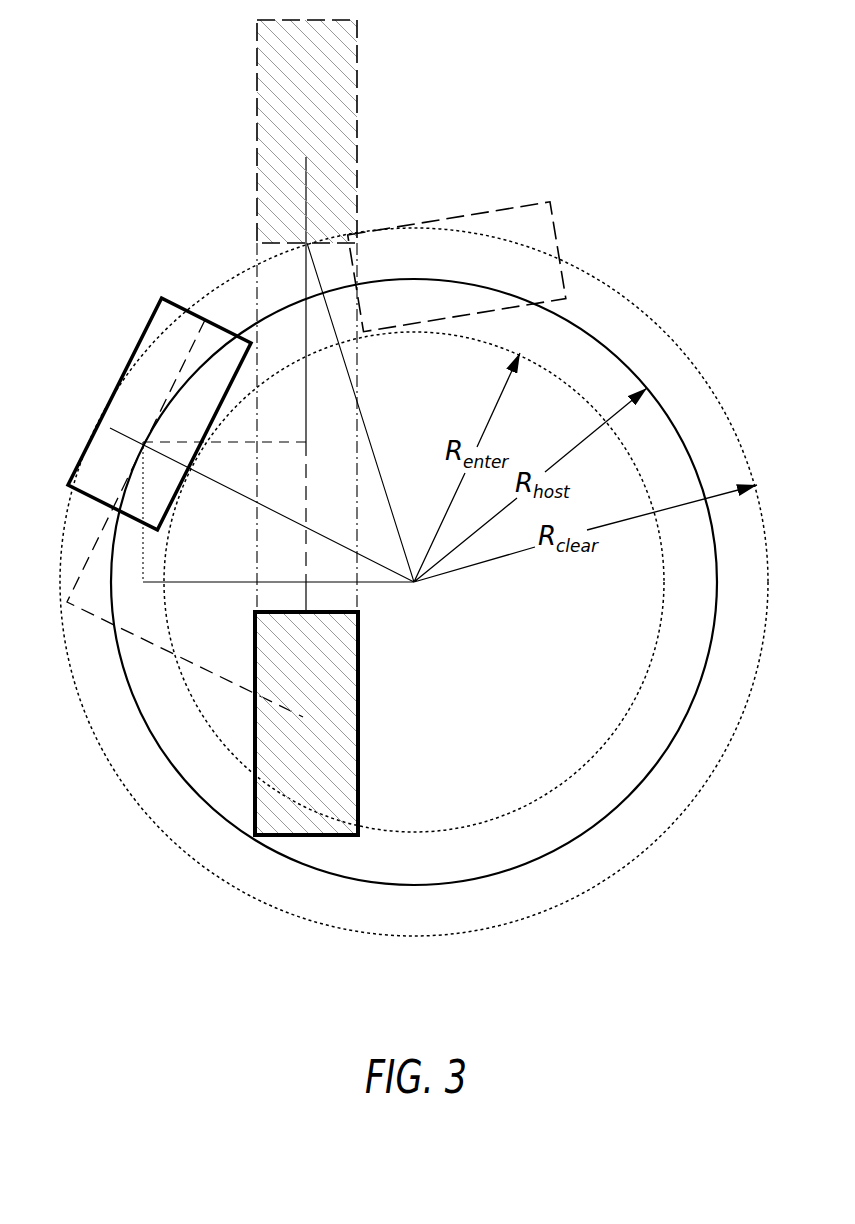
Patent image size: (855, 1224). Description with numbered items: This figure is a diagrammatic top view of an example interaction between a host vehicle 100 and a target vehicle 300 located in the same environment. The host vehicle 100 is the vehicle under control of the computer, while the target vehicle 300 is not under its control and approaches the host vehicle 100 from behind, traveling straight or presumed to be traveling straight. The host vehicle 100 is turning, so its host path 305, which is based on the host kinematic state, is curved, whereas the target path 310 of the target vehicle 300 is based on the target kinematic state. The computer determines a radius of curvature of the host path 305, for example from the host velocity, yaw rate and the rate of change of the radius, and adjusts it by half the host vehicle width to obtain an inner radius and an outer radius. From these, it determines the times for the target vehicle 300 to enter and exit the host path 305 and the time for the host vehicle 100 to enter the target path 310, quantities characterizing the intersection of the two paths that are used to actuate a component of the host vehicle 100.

The host vehicle 100 is at (143, 328).
The target vehicle 300 is at (358, 670).
The host path 305 is at (244, 328).
The target path 310 is at (303, 285).